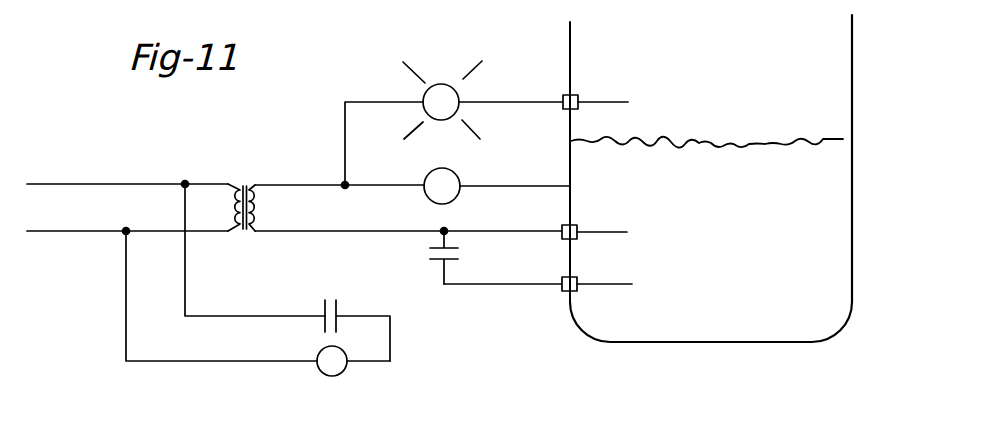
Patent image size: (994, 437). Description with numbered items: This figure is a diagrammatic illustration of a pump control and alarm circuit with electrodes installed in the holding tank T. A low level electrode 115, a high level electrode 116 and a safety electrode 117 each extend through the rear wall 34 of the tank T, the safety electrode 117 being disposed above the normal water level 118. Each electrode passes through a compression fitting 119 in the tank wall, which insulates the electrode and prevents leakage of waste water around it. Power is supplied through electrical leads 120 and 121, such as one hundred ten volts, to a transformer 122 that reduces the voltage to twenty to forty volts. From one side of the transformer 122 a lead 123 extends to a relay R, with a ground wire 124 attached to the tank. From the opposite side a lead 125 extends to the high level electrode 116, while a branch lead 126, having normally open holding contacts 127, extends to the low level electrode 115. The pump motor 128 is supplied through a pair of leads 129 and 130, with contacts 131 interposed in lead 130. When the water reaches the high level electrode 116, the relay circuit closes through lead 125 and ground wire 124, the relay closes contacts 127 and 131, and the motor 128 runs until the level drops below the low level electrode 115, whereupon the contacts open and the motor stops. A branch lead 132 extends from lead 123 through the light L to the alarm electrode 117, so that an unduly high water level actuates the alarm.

The rear wall 34 is at (571, 42).
The low level electrode 115 is at (605, 288).
The high level electrode 116 is at (600, 235).
The safety electrode 117 is at (603, 101).
The normal water level 118 is at (758, 140).
The compression fitting 119 is at (562, 95).
The electrical lead 120 is at (111, 183).
The electrical lead 121 is at (81, 232).
The transformer 122 is at (245, 182).
The lead 123 is at (403, 185).
The ground wire 124 is at (521, 186).
The lead 125 is at (377, 232).
The branch lead 126 is at (486, 284).
The holding contacts 127 is at (455, 251).
The motor 128 is at (332, 377).
The lead 129 is at (125, 332).
The lead 130 is at (186, 287).
The contacts 131 is at (338, 304).
The branch lead 132 is at (369, 102).
The tank T is at (858, 202).